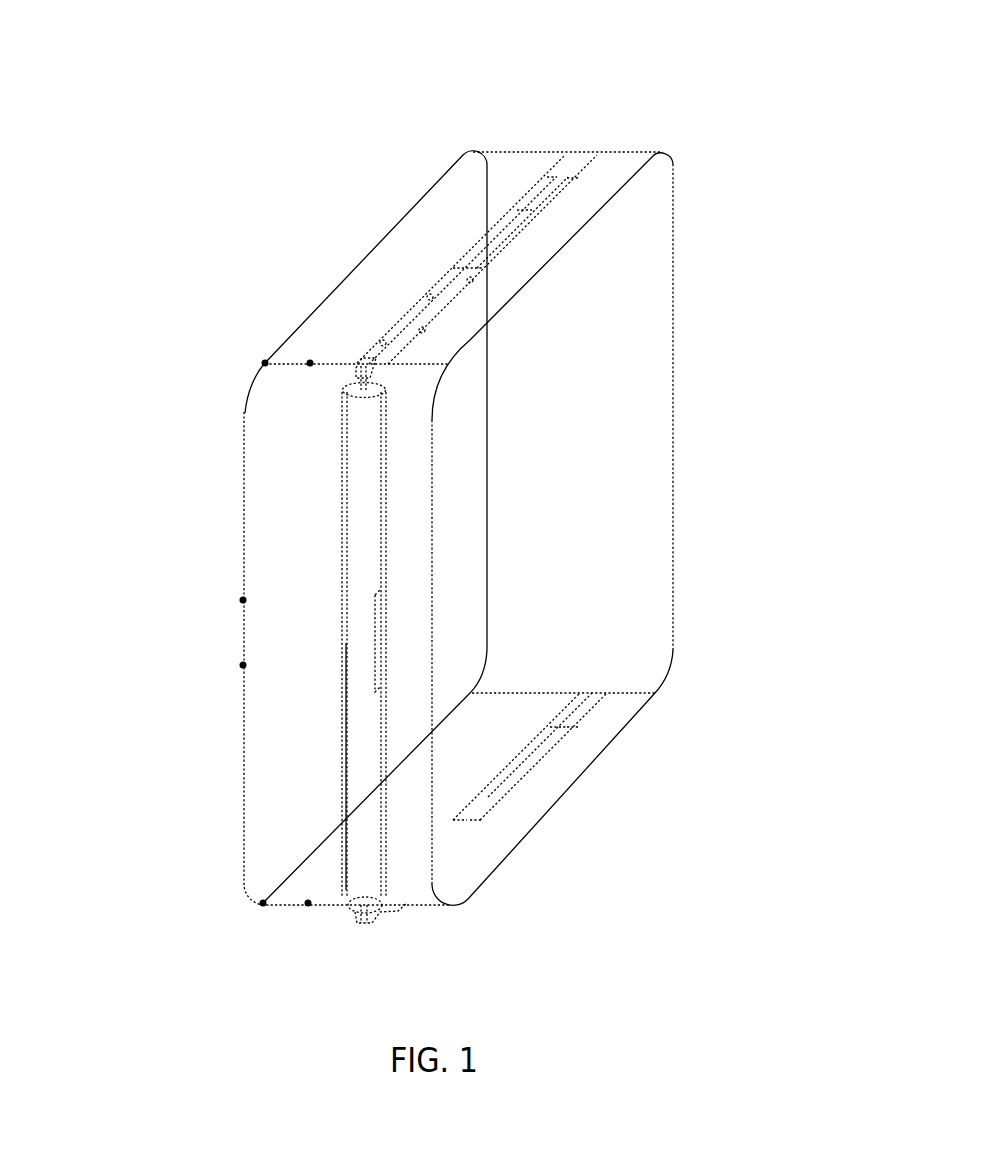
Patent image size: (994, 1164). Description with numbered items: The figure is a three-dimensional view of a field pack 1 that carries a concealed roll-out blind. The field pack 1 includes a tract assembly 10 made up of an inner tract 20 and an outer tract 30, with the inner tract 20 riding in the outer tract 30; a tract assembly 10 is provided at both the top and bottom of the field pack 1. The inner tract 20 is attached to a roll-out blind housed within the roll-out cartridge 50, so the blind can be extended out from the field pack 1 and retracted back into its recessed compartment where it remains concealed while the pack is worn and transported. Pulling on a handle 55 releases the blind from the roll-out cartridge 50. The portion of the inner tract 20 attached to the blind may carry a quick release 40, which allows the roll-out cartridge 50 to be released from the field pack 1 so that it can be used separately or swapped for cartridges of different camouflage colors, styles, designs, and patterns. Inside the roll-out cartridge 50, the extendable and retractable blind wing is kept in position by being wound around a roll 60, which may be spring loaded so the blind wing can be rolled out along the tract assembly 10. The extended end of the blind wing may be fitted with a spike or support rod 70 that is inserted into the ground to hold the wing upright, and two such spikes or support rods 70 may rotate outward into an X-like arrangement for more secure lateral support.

The field pack 1 is at (699, 98).
The tract assembly 10 is at (585, 152).
The inner tract 20 is at (420, 333).
The outer tract 30 is at (475, 243).
The quick release 40 is at (360, 376).
The roll-out cartridge 50 is at (358, 568).
The handle 55 is at (375, 628).
The roll 60 is at (355, 903).
The spike or support rod 70 is at (310, 363).